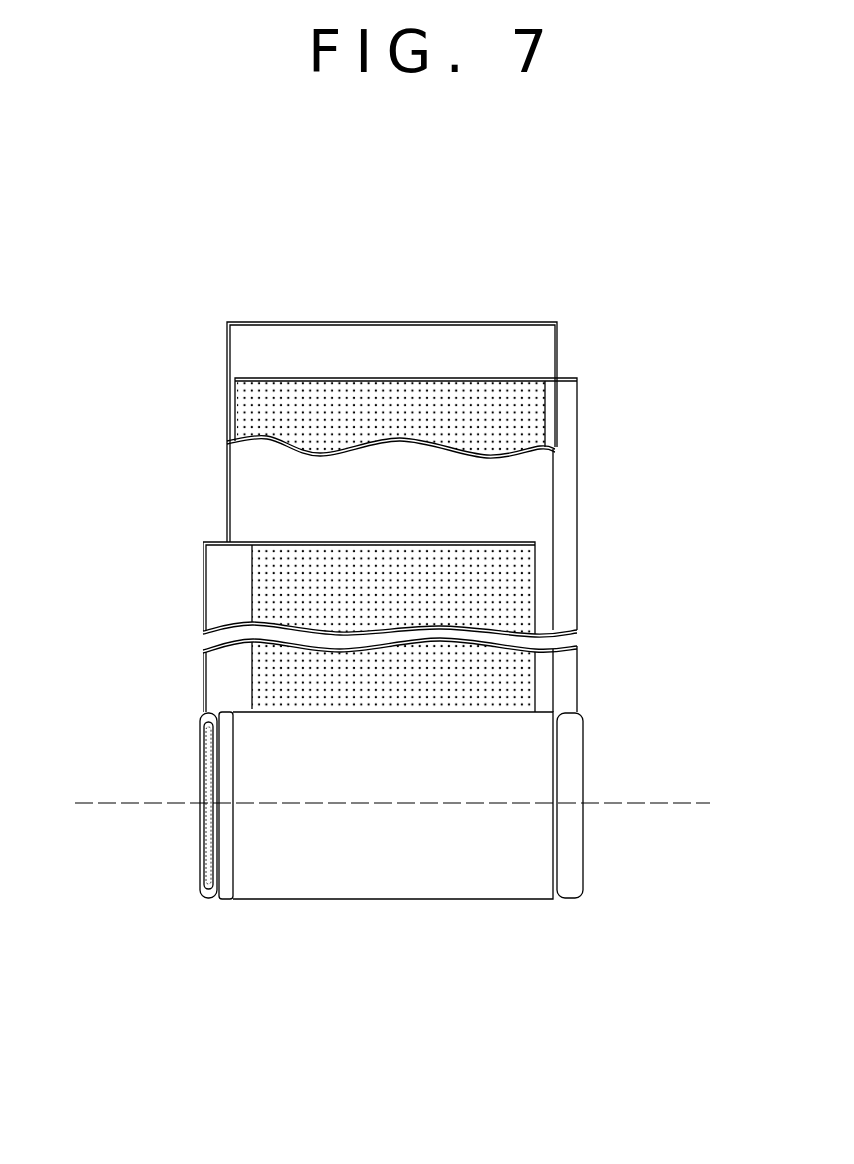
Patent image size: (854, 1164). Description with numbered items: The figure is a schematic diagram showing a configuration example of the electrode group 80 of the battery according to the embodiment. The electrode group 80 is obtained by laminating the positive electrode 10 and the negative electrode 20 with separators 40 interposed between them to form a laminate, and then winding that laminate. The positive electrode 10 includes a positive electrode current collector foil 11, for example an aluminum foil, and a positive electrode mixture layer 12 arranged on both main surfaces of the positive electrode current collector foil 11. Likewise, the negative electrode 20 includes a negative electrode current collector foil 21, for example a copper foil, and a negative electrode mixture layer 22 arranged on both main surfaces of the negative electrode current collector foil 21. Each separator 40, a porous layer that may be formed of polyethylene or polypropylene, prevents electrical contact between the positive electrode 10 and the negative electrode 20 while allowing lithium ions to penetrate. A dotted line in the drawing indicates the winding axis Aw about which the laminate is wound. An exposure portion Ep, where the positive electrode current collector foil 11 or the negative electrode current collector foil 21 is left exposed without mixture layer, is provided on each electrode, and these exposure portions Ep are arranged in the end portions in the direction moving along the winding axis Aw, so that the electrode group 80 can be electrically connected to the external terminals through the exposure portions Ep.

The positive electrode 10 is at (337, 582).
The positive electrode current collector foil 11 is at (222, 541).
The positive electrode mixture layer 12 is at (275, 542).
The negative electrode 20 is at (458, 506).
The negative electrode current collector foil 21 is at (566, 380).
The negative electrode mixture layer 22 is at (513, 385).
The separator 40 is at (299, 322).
The electrode group 80 is at (566, 918).
The exposure portion Ep is at (566, 430).
The winding axis Aw is at (648, 800).